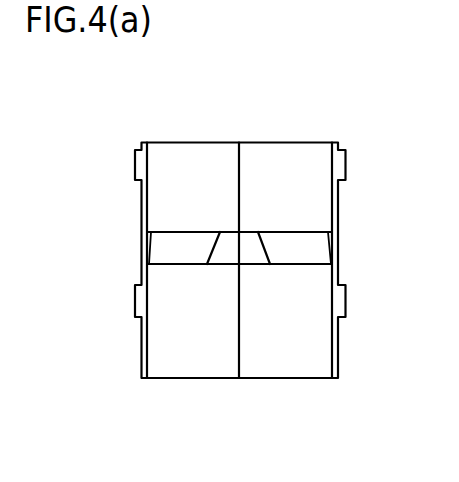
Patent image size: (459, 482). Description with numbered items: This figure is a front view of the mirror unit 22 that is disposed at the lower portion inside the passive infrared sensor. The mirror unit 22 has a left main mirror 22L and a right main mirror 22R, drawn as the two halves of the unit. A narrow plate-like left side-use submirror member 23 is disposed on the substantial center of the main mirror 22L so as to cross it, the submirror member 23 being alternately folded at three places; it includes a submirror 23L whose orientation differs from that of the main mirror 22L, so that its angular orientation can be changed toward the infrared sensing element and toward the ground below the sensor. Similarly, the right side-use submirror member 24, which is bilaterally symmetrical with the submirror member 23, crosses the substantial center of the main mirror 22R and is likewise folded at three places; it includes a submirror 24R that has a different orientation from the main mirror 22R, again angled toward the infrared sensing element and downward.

The mirror unit 22 is at (202, 90).
The main mirror 22L is at (200, 347).
The main mirror 22R is at (279, 347).
The left side-use submirror member 23 is at (177, 231).
The right side-use submirror member 24 is at (302, 230).
The submirror 23L is at (173, 248).
The submirror 24R is at (307, 248).